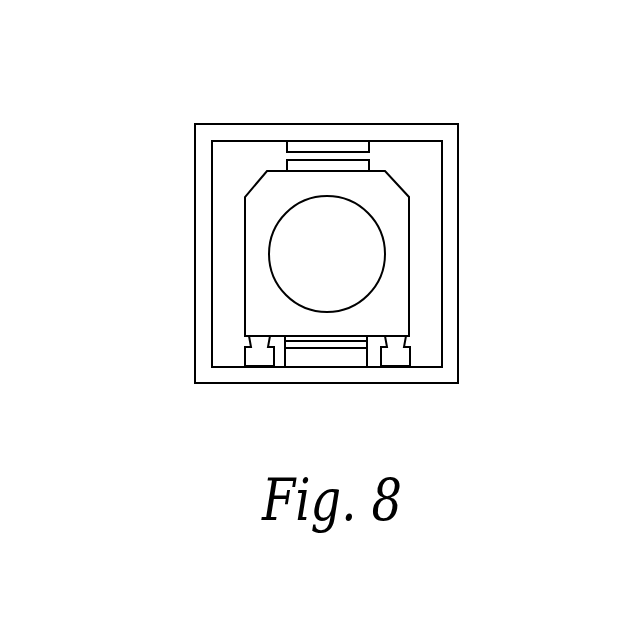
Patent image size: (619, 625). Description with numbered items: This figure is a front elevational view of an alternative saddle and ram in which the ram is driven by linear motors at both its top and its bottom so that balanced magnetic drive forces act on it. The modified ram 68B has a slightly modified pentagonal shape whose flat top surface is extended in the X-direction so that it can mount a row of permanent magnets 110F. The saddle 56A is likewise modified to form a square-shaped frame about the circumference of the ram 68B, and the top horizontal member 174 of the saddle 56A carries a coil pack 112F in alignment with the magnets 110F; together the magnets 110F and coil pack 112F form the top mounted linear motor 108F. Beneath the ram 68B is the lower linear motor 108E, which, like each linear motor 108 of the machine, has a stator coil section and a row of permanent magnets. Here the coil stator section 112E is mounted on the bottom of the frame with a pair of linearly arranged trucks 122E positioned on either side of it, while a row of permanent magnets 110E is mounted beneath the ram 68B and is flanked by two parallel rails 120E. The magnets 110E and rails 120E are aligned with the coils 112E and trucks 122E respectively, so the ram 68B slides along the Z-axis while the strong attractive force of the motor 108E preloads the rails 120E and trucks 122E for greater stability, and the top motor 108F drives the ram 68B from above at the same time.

The saddle 56A is at (452, 245).
The top horizontal member 174 is at (408, 141).
The linear motor 108 is at (304, 104).
The modified ram 68B is at (396, 218).
The top mounted linear motor 108F is at (379, 109).
The permanent magnets 110F is at (290, 168).
The coil pack 112F is at (330, 146).
The linear motor 108E is at (337, 374).
The permanent magnets 110E is at (305, 343).
The coil stator section 112E is at (337, 357).
The rails 120E is at (398, 344).
The trucks 122E is at (398, 360).